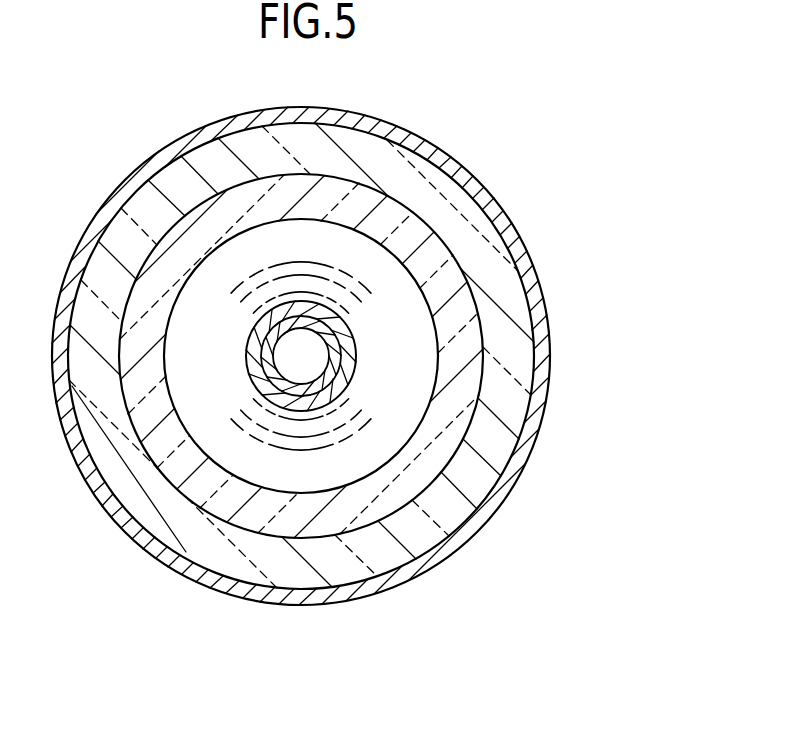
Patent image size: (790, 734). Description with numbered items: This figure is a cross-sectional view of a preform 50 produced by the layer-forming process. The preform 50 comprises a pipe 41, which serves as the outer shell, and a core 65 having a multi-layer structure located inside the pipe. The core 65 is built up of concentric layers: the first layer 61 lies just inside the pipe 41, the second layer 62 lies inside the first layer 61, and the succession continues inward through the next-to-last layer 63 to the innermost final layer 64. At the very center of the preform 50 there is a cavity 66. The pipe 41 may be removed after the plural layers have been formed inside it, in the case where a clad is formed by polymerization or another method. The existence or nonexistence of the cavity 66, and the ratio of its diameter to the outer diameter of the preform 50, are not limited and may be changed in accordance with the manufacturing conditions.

The preform 50 is at (530, 152).
The pipe 41 is at (517, 247).
The first layer 61 is at (495, 282).
The second layer 62 is at (472, 323).
The (n−1)th layer 63 is at (345, 357).
The nth layer 64 is at (330, 375).
The core 65 is at (637, 250).
The cavity 66 is at (302, 357).